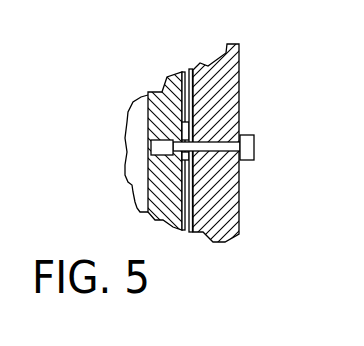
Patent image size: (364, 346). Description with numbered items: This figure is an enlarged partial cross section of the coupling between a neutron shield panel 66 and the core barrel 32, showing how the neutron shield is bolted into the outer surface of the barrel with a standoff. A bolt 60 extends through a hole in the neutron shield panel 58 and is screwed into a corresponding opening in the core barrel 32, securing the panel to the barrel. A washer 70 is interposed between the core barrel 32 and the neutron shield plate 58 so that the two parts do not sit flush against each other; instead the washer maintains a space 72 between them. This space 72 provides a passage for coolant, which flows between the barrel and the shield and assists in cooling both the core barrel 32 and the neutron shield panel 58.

The neutron shield panel 58 is at (148, 56).
The core barrel 32 is at (148, 189).
The neutron shield panel 66 is at (240, 106).
The washer 70 is at (182, 124).
The space 72 is at (185, 232).
The bolt 60 is at (254, 147).